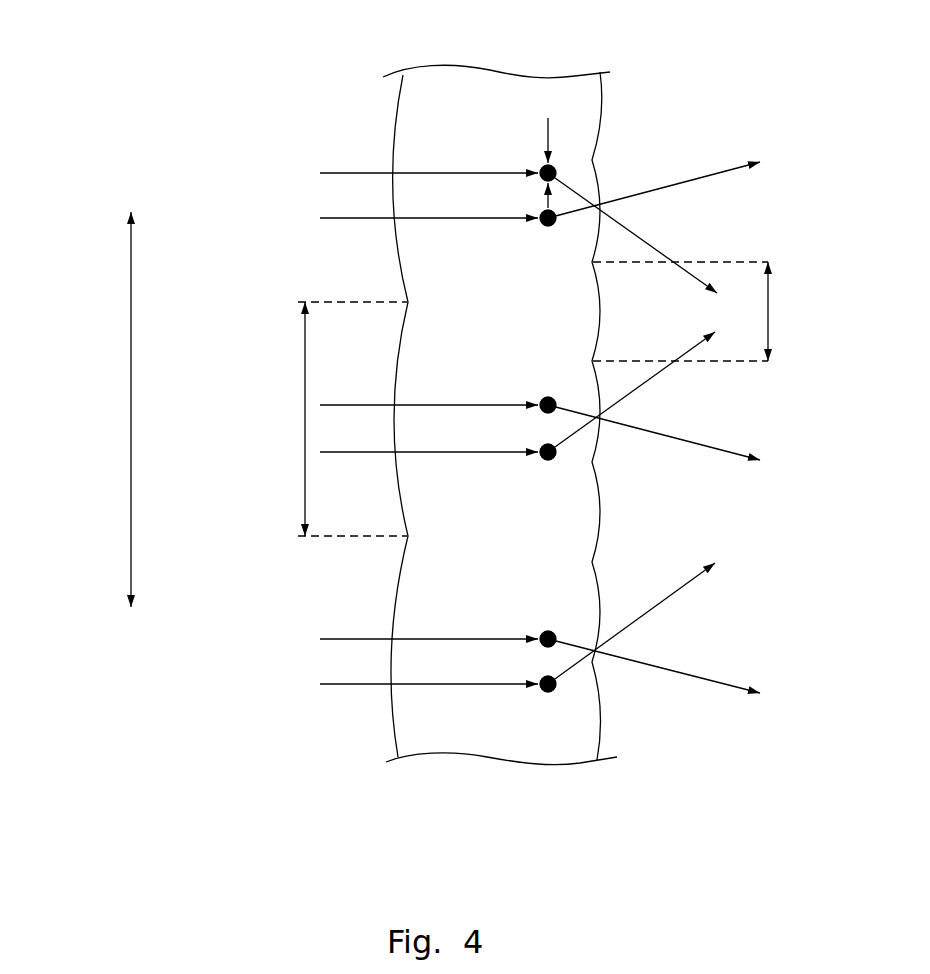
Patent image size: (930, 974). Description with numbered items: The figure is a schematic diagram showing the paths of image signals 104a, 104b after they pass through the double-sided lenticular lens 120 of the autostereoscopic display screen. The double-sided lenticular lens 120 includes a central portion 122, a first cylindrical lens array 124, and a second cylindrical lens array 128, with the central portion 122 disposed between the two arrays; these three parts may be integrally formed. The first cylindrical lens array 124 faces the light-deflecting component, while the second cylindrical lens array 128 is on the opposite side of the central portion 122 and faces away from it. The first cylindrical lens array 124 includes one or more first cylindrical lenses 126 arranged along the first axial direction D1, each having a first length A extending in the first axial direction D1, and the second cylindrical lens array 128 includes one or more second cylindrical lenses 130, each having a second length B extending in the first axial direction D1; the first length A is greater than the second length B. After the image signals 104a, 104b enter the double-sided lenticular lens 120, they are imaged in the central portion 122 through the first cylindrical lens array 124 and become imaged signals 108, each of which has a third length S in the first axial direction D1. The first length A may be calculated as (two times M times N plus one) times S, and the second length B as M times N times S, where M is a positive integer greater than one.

The double-sided lenticular lens 120 is at (260, 43).
The central portion 122 is at (485, 738).
The first cylindrical lens array 124 is at (397, 739).
The first cylindrical lens 126 is at (390, 705).
The second cylindrical lens array 128 is at (605, 733).
The second cylindrical lens 130 is at (600, 712).
The imaged signal 108 is at (540, 166).
The image signal 104a is at (558, 162).
The image signal 104b is at (557, 208).
The third length S is at (543, 131).
The first length A is at (305, 425).
The second length B is at (773, 303).
The first axial direction D1 is at (128, 410).